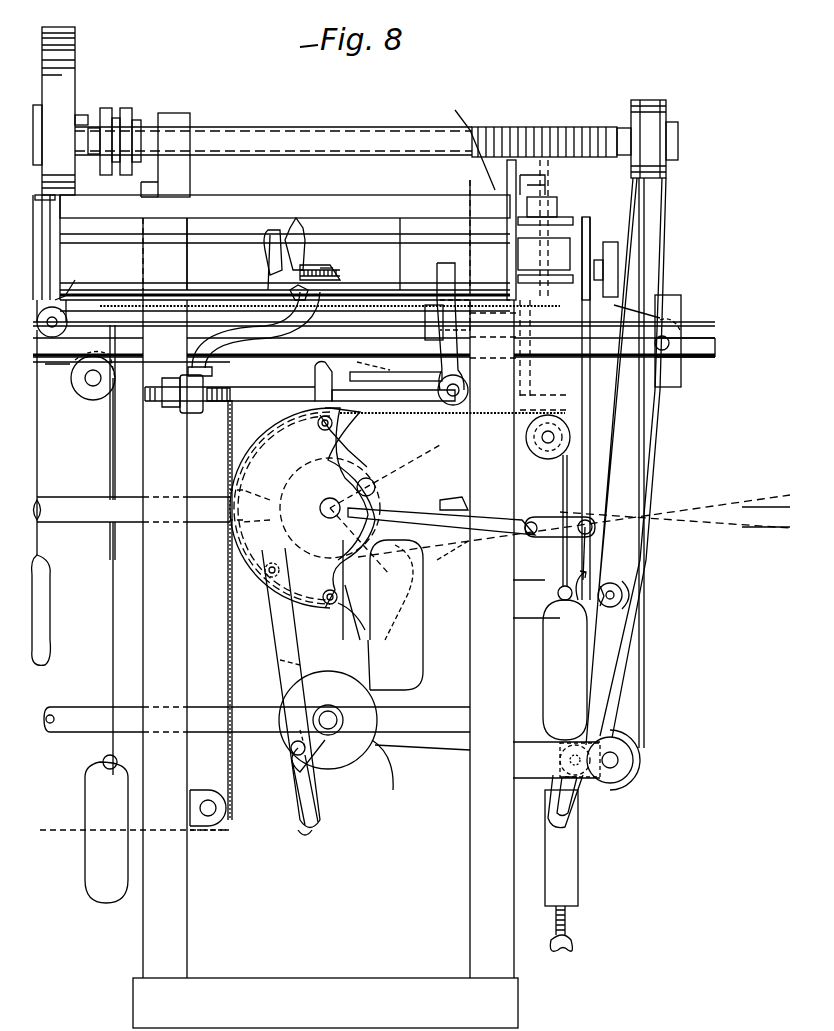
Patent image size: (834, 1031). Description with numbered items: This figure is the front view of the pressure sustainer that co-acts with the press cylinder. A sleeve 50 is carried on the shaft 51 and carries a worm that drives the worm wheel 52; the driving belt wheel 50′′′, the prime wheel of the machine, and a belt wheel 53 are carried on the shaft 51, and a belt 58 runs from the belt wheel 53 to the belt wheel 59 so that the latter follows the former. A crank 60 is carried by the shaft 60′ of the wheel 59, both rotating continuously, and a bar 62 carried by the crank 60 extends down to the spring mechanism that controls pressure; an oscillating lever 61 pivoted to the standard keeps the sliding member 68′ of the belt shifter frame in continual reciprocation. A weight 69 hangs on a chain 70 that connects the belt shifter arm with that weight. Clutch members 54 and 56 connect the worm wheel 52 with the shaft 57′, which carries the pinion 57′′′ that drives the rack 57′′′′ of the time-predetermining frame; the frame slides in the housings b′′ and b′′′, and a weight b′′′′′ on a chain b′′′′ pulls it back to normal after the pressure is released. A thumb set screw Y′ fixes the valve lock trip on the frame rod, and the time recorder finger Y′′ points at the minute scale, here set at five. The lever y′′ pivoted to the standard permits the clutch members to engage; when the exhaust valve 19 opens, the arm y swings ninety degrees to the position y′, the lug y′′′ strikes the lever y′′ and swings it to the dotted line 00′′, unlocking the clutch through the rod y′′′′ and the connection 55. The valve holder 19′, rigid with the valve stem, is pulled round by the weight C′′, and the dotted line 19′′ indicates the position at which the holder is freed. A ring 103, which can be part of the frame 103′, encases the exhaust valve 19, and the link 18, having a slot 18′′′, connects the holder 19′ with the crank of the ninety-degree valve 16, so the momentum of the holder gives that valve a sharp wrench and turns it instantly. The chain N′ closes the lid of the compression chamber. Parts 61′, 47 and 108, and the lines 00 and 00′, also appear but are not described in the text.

The sleeve 50 is at (330, 127).
The driving belt wheel 50′′′ is at (70, 75).
The shaft 51 is at (386, 128).
The worm wheel 52 is at (552, 127).
The belt wheel 53 is at (668, 130).
The clutch member 54 is at (560, 205).
The clutch unlocking rod 55 is at (590, 265).
The clutch member 56 is at (585, 230).
The shaft 57′ is at (548, 188).
The pinion 57′′′ is at (660, 318).
The rack 57′′′′ is at (67, 322).
The belt 58 is at (648, 220).
The belt wheel 59 is at (625, 742).
The crank 60 is at (600, 770).
The shaft 60′ is at (618, 760).
The oscillating lever 61 is at (664, 413).
The link 61′ is at (580, 808).
The bar 62 is at (617, 598).
The sliding member 68′ is at (684, 302).
The weight 69 is at (106, 829).
The chain 70 is at (108, 642).
The ninety-degree valve 16 is at (345, 765).
The link 18 is at (275, 655).
The slot 18′′′ is at (302, 818).
The exhaust valve 19 is at (358, 612).
The valve holder 19′ is at (305, 508).
The dotted line 19′′ is at (470, 322).
The lever 47 is at (436, 272).
The ring 103 is at (380, 570).
The frame 103′ is at (422, 737).
The cam 108 is at (395, 779).
The chain N′ is at (228, 578).
The weight C′′ is at (565, 663).
The thumb set screw Y′ is at (261, 255).
The time recorder finger Y′′ is at (322, 210).
The arm y is at (385, 468).
The open position y′ is at (369, 547).
The lever y′′ is at (405, 512).
The lug y′′′ is at (368, 480).
The rod y′′′′ is at (590, 487).
The center line 00 is at (574, 523).
The center line 00′ is at (766, 538).
The dotted line 00′′ is at (452, 548).
The housing b′′ is at (60, 210).
The housing b′′′ is at (471, 137).
The chain b′′′′ is at (50, 585).
The weight b′′′′′ is at (38, 440).